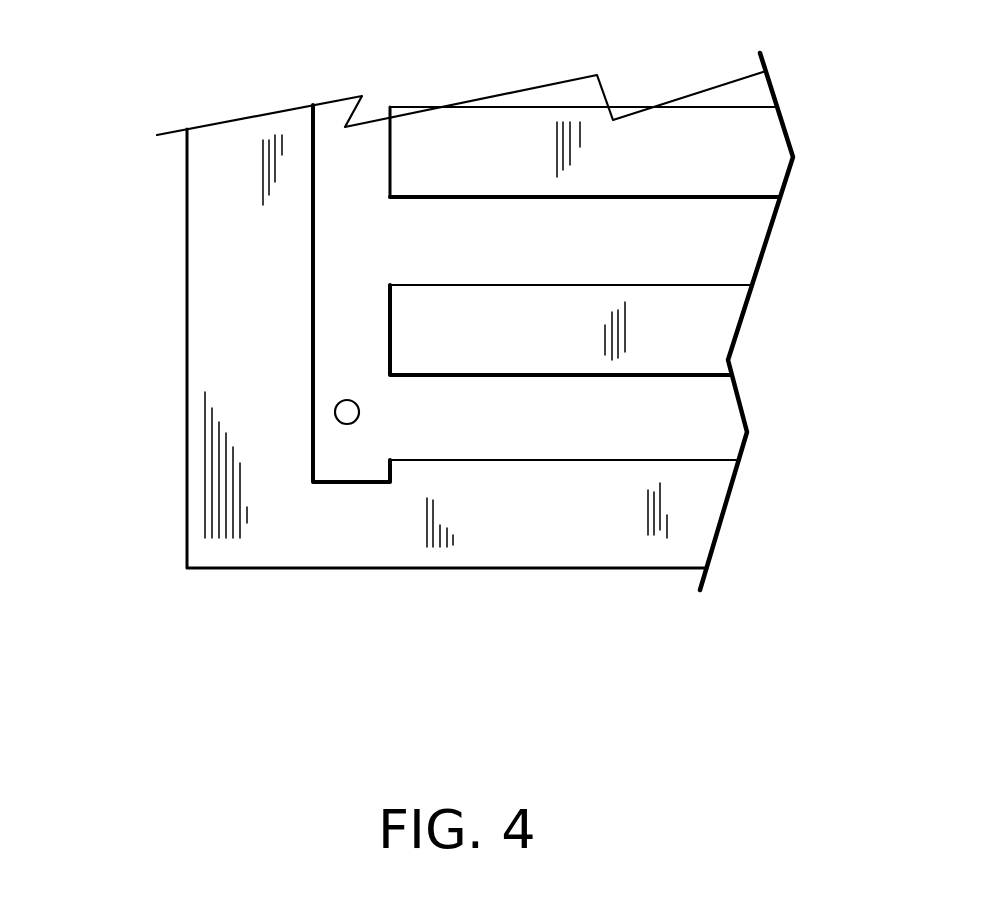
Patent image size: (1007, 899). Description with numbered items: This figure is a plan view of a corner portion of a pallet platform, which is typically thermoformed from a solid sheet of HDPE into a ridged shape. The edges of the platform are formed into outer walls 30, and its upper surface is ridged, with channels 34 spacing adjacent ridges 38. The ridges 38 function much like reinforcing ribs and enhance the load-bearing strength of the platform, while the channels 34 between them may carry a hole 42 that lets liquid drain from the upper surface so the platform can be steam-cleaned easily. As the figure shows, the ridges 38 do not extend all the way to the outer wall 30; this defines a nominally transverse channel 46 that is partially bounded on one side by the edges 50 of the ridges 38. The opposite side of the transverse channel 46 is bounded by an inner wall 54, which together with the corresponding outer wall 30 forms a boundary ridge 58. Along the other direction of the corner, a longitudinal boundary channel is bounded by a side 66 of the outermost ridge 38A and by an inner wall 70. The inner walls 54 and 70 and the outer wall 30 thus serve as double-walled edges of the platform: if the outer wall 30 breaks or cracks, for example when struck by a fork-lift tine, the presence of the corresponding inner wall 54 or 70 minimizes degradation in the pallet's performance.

The outer wall 30 is at (187, 215).
The channel 34 is at (767, 155).
The ridge 38 is at (748, 240).
The outermost ridge 38A is at (567, 331).
The hole 42 is at (337, 405).
The transverse channel 46 is at (347, 277).
The edge of ridge 50 is at (390, 163).
The inner wall 54 is at (313, 243).
The boundary ridge 58 is at (235, 143).
The side of outermost ridge 66 is at (693, 378).
The inner wall 70 is at (508, 460).